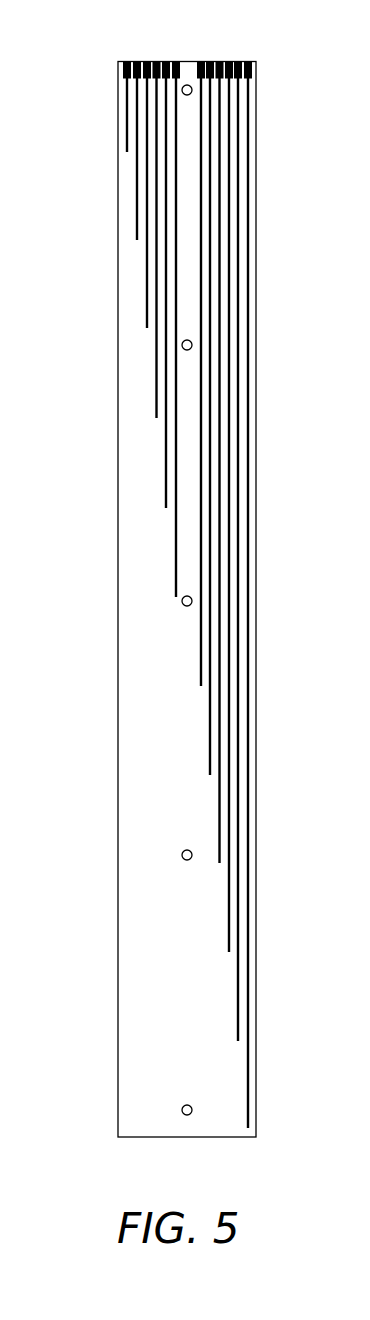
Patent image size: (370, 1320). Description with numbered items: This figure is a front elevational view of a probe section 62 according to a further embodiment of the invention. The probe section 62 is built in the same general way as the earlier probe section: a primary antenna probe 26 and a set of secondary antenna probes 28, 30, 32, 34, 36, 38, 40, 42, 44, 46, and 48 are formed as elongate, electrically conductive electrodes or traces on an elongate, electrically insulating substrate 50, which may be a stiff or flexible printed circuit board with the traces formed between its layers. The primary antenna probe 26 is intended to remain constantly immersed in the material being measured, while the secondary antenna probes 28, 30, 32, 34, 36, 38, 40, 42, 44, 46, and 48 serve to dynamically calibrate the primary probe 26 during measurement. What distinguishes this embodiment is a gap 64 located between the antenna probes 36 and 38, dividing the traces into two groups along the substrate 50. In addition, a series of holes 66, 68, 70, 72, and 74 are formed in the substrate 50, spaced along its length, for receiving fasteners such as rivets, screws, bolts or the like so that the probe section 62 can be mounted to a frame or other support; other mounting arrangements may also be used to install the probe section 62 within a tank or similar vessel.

The primary antenna probe 26 is at (248, 1088).
The secondary antenna probe 28 is at (238, 992).
The secondary antenna probe 30 is at (229, 906).
The secondary antenna probe 32 is at (219, 828).
The secondary antenna probe 34 is at (210, 732).
The secondary antenna probe 36 is at (201, 642).
The secondary antenna probe 38 is at (176, 551).
The secondary antenna probe 40 is at (166, 478).
The secondary antenna probe 42 is at (156, 382).
The secondary antenna probe 44 is at (147, 291).
The secondary antenna probe 46 is at (137, 197).
The secondary antenna probe 48 is at (127, 117).
The substrate 50 is at (130, 1090).
The probe section 62 is at (94, 66).
The gap 64 is at (187, 73).
The hole 66 is at (190, 94).
The hole 68 is at (190, 349).
The hole 70 is at (190, 605).
The hole 72 is at (190, 859).
The hole 74 is at (187, 1115).